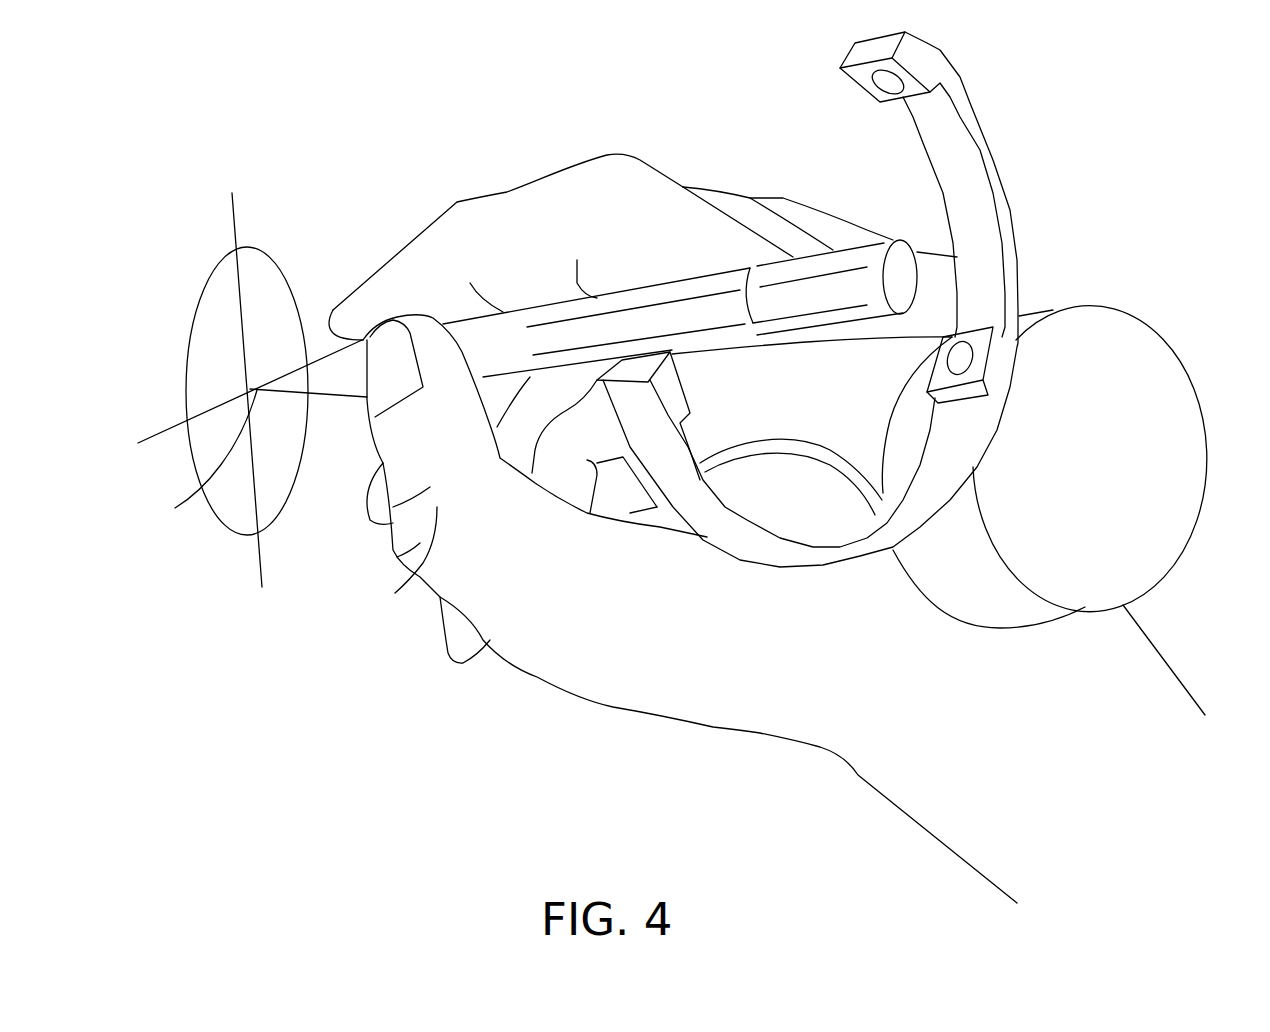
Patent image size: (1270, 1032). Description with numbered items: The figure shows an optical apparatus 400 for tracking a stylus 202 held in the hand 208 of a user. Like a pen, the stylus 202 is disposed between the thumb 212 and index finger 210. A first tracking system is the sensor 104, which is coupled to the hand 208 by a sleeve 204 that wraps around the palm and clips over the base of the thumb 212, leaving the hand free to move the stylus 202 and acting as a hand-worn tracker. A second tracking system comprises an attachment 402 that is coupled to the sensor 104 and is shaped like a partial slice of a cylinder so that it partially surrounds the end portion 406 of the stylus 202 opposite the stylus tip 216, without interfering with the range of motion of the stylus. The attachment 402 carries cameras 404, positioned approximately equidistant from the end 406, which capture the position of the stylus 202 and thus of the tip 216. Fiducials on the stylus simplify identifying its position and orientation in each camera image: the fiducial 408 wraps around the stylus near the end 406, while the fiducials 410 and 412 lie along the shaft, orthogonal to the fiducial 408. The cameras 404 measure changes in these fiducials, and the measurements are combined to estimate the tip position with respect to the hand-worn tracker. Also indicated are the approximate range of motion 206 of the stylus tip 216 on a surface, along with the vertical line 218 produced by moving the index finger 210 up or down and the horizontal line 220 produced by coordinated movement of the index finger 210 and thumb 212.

The sensor 104 is at (1092, 430).
The stylus 202 is at (700, 273).
The sleeve 204 is at (856, 413).
The range of motion 206 is at (195, 317).
The hand 208 is at (664, 528).
The index finger 210 is at (433, 250).
The thumb 212 is at (395, 593).
The stylus tip 216 is at (193, 454).
The vertical line 218 is at (260, 557).
The horizontal line 220 is at (158, 433).
The optical apparatus 400 is at (629, 880).
The attachment 402 is at (1013, 205).
The cameras 404 is at (905, 60).
The end portion 406 is at (900, 275).
The fiducial 408 is at (750, 270).
The fiducial 410 is at (631, 303).
The fiducial 412 is at (700, 332).